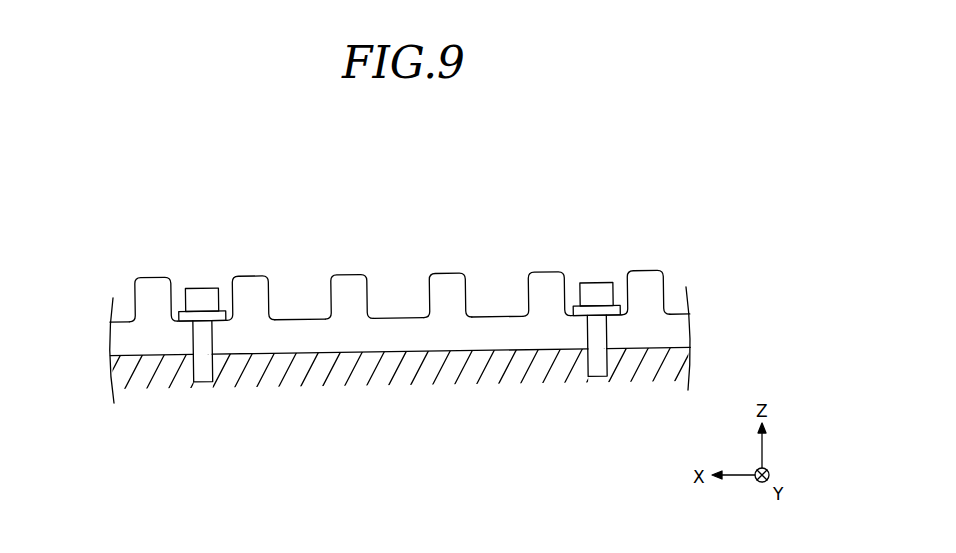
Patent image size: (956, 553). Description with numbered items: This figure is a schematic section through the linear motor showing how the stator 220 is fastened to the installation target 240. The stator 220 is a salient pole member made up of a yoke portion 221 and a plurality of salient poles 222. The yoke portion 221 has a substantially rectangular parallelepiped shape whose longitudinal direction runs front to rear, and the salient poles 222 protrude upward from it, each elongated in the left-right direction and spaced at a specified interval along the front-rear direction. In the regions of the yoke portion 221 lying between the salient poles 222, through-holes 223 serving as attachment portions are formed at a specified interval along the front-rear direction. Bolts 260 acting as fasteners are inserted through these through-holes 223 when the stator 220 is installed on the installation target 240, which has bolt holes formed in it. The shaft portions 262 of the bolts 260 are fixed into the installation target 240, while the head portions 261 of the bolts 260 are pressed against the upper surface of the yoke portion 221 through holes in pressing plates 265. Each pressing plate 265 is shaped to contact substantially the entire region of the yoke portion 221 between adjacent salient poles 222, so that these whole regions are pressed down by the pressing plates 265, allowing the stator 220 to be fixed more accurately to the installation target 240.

The stator 220 is at (406, 306).
The yoke portion 221 is at (398, 333).
The salient poles 222 is at (452, 290).
The through-holes 223 is at (204, 343).
The installation target 240 is at (138, 352).
The bolts 260 is at (372, 327).
The head portions 261 is at (197, 300).
The shaft portions 262 is at (192, 378).
The pressing plates 265 is at (233, 305).